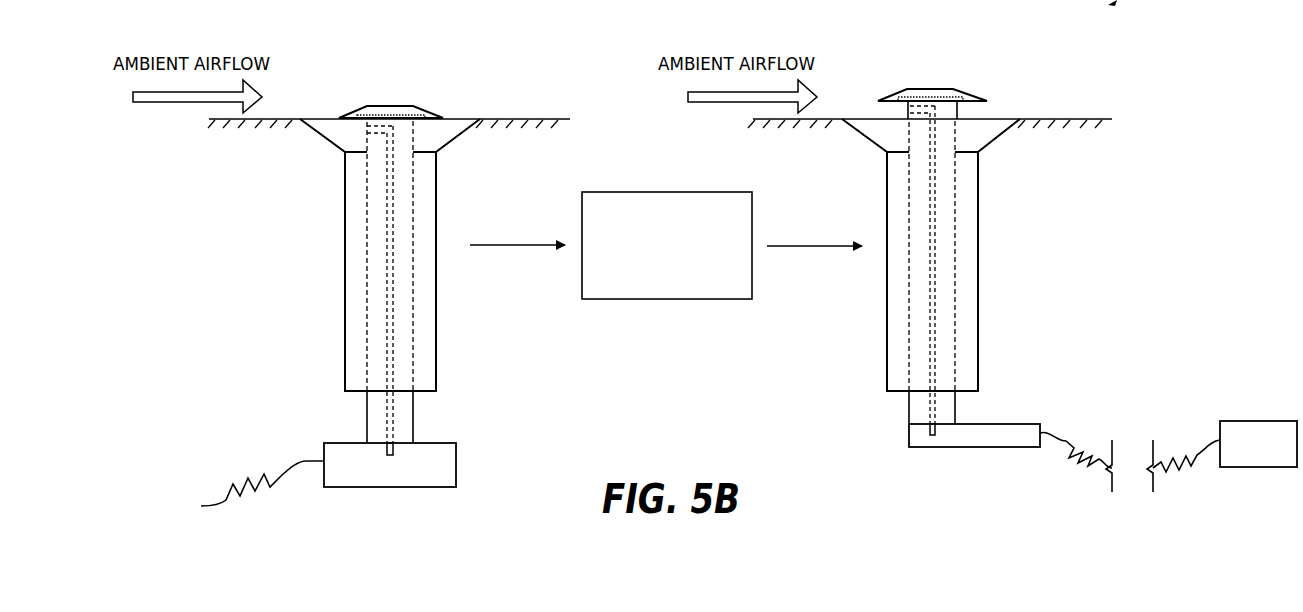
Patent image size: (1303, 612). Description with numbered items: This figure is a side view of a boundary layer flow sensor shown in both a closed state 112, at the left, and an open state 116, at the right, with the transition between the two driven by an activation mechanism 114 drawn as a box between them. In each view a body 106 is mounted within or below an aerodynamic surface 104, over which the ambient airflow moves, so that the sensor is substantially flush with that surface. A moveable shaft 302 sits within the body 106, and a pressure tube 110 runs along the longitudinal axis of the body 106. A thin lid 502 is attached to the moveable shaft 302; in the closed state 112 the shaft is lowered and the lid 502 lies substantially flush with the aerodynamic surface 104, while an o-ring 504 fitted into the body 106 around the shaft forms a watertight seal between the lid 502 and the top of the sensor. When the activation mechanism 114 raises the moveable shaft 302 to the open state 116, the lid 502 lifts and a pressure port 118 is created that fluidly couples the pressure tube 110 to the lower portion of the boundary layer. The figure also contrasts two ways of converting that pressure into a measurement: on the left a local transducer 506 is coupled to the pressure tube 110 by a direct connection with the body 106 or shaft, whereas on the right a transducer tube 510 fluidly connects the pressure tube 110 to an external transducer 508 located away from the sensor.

The aerodynamic surface 104 is at (505, 118).
The body 106 is at (345, 205).
The pressure tube 110 is at (386, 251).
The closed state 112 is at (387, 78).
The activation mechanism 114 is at (666, 245).
The open state 116 is at (931, 62).
The pressure port 118 is at (884, 112).
The moveable shaft 302 is at (408, 218).
The lid 502 is at (425, 108).
The o-ring 504 is at (377, 118).
The local transducer 506 is at (446, 470).
The external transducer 508 is at (1275, 423).
The transducer tube 510 is at (1050, 433).